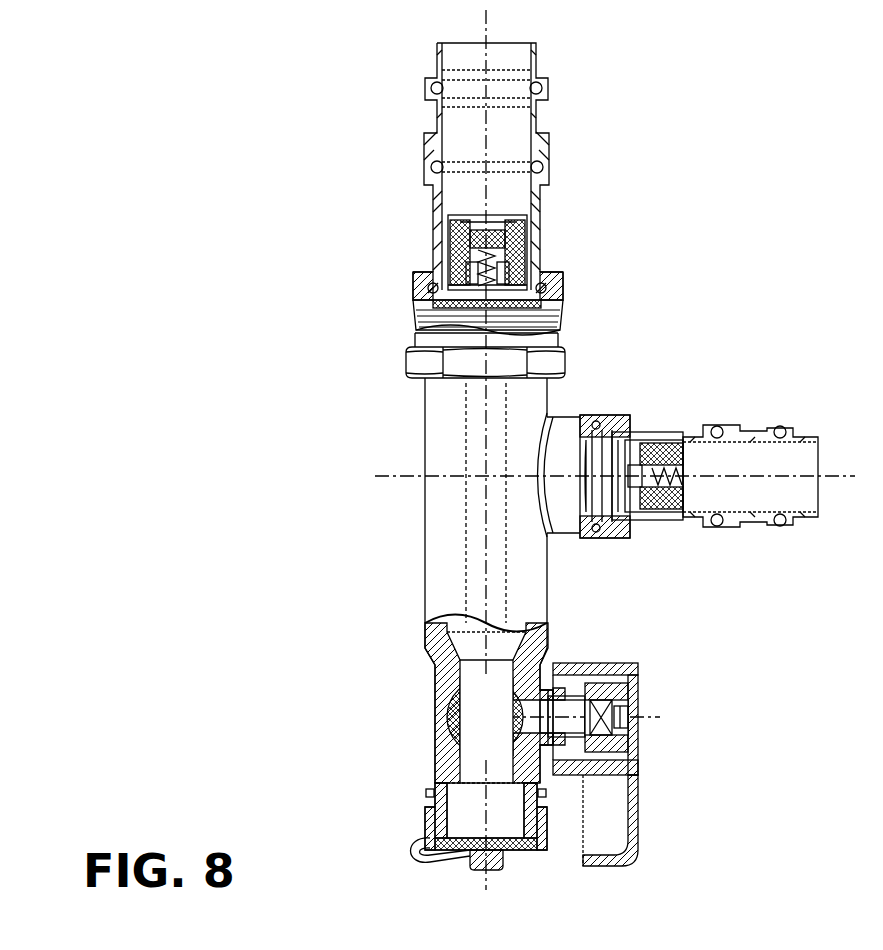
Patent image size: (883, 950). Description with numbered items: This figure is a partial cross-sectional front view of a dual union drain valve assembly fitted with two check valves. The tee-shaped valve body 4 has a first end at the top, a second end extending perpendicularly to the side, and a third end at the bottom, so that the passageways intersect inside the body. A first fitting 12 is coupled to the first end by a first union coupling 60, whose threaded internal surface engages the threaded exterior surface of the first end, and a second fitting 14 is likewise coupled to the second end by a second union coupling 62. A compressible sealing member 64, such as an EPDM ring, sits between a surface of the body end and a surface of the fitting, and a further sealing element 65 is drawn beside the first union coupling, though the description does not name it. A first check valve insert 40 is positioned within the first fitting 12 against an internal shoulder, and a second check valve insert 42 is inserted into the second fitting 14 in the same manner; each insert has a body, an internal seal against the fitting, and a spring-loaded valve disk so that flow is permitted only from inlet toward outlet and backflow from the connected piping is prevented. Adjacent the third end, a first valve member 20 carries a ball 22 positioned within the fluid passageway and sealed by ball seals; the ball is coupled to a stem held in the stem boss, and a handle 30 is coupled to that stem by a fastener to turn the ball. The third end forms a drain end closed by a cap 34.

The valve body 4 is at (427, 512).
The first fitting 12 is at (545, 198).
The second fitting 14 is at (695, 435).
The first valve member 20 is at (450, 700).
The ball 22 is at (440, 728).
The handle 30 is at (640, 770).
The cap 34 is at (540, 848).
The first check valve insert 40 is at (520, 240).
The second check valve insert 42 is at (647, 435).
The first union coupling 60 is at (413, 290).
The second union coupling 62 is at (605, 420).
The sealing member 64 is at (420, 315).
The O-ring 65 is at (430, 280).